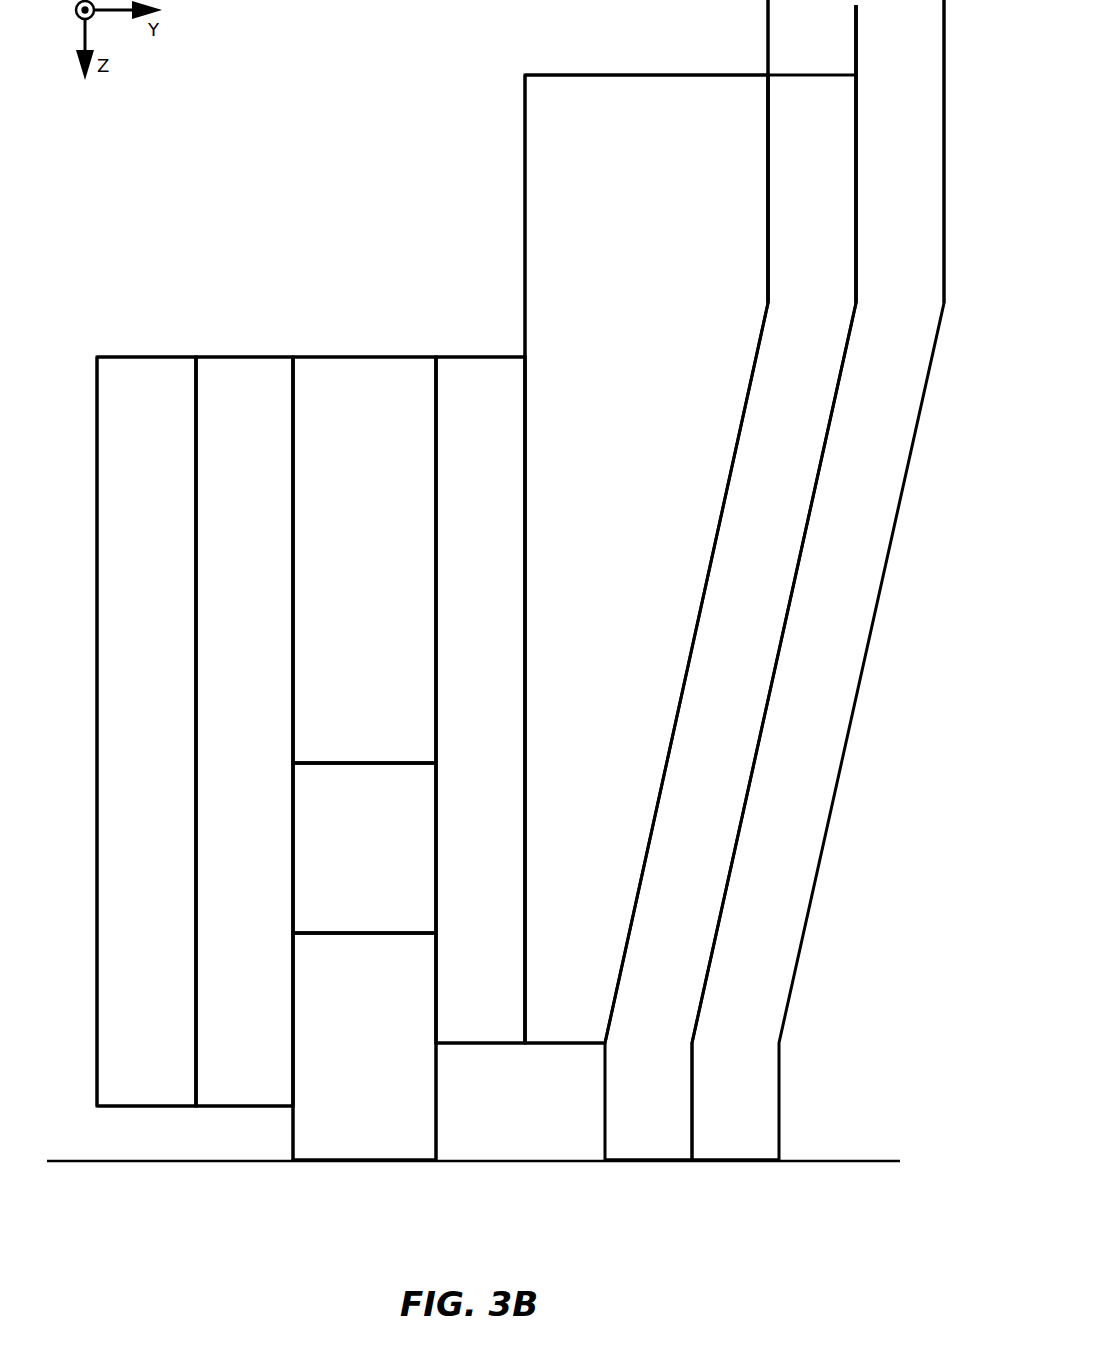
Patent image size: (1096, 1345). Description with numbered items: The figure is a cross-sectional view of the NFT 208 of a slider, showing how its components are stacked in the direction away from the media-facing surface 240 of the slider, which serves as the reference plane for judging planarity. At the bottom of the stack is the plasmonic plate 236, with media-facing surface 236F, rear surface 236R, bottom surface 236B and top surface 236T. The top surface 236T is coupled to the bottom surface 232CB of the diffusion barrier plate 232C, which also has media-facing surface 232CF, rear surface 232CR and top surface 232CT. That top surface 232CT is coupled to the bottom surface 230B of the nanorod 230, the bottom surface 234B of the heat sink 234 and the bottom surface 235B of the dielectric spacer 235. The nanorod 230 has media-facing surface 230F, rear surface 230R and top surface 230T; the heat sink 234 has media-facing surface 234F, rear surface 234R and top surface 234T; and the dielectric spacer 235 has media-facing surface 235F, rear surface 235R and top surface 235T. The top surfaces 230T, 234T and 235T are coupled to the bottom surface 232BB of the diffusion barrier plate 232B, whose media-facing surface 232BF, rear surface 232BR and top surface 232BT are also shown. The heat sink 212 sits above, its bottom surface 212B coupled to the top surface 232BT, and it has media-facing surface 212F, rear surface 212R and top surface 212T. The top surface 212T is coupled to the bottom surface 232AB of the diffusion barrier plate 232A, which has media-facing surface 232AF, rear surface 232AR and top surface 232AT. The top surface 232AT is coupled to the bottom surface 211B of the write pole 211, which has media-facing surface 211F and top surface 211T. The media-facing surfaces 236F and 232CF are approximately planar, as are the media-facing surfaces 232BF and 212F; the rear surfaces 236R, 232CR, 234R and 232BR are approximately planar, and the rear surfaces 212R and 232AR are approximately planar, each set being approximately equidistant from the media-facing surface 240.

The NFT 208 is at (176, 190).
The write pole 211 is at (883, 462).
The top surface of write pole 211T is at (944, 162).
The bottom surface of write pole 211B is at (861, 266).
The media-facing surface of write pole 211F is at (727, 1164).
The heat sink 212 is at (647, 240).
The rear surface of heat sink 212R is at (614, 75).
The top surface of heat sink 212T is at (767, 146).
The bottom surface of heat sink 212B is at (527, 517).
The media-facing surface of heat sink 212F is at (563, 1045).
The nanorod 230 is at (385, 1105).
The rear surface of nanorod 230R is at (338, 935).
The top surface of nanorod 230T is at (435, 1044).
The bottom surface of nanorod 230B is at (296, 1033).
The media-facing surface of nanorod 230F is at (363, 1163).
The diffusion barrier plate 232A is at (794, 465).
The rear surface of diffusion barrier plate 232AR is at (772, 74).
The top surface of diffusion barrier plate 232AT is at (855, 162).
The bottom surface of diffusion barrier plate 232AB is at (769, 245).
The media-facing surface of diffusion barrier plate 232AF is at (641, 1164).
The diffusion barrier plate 232B is at (502, 485).
The rear surface of diffusion barrier plate 232BR is at (458, 357).
The top surface of diffusion barrier plate 232BT is at (525, 663).
The bottom surface of diffusion barrier plate 232BB is at (437, 743).
The media-facing surface of diffusion barrier plate 232BF is at (480, 1045).
The diffusion barrier plate 232C is at (272, 517).
The rear surface of diffusion barrier plate 232CR is at (270, 357).
The top surface of diffusion barrier plate 232CT is at (292, 660).
The bottom surface of diffusion barrier plate 232CB is at (197, 742).
The media-facing surface of diffusion barrier plate 232CF is at (202, 1108).
The heat sink 234 is at (380, 507).
The rear surface of heat sink 234R is at (345, 357).
The top surface of heat sink 234T is at (435, 650).
The bottom surface of heat sink 234B is at (294, 722).
The media-facing surface of heat sink 234F is at (365, 760).
The dielectric spacer 235 is at (385, 857).
The rear surface of dielectric spacer 235R is at (308, 763).
The top surface of dielectric spacer 235T is at (435, 798).
The bottom surface of dielectric spacer 235B is at (305, 887).
The media-facing surface of dielectric spacer 235F is at (406, 932).
The plasmonic plate 236 is at (167, 517).
The rear surface of plasmonic plate 236R is at (172, 357).
The top surface of plasmonic plate 236T is at (195, 663).
The bottom surface of plasmonic plate 236B is at (98, 738).
The media-facing surface of plasmonic plate 236F is at (103, 1108).
The media-facing surface of slider 240 is at (822, 1163).